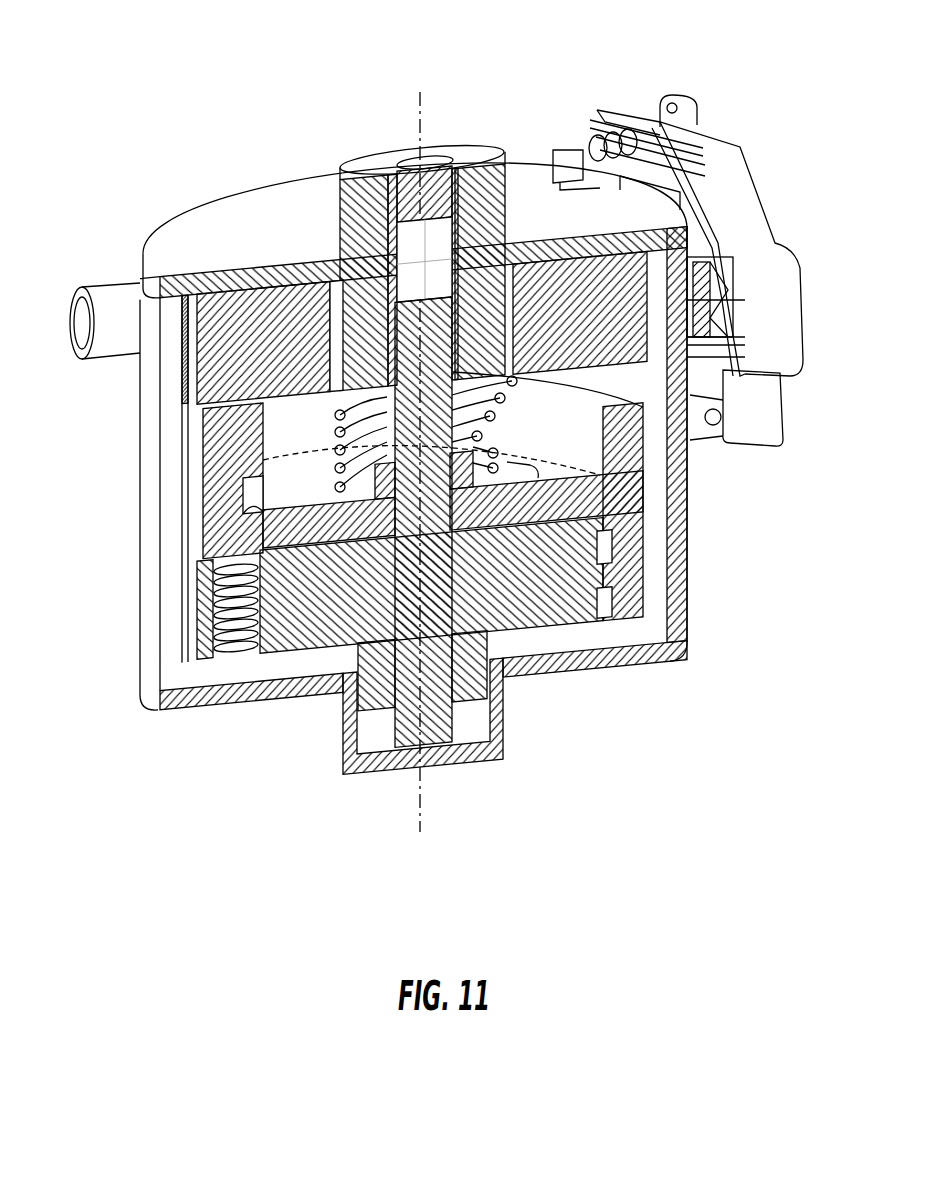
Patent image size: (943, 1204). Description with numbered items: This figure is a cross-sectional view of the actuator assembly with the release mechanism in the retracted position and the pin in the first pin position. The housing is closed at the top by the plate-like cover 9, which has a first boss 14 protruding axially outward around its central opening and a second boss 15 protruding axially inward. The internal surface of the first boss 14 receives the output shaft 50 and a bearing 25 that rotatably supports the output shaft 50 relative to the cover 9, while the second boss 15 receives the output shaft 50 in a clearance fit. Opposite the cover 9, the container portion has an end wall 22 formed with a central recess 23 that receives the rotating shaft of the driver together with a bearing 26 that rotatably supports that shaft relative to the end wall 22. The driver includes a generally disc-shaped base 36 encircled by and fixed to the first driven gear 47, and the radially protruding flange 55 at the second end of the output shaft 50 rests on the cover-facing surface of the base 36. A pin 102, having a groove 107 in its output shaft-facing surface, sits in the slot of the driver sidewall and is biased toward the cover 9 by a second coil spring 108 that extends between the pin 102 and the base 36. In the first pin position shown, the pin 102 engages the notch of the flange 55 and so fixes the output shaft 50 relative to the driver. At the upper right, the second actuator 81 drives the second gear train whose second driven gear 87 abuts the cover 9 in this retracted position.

The cover 9 is at (188, 213).
The first boss 14 is at (343, 212).
The second boss 15 is at (363, 320).
The bearing 25 is at (377, 230).
The second actuator 81 is at (707, 135).
The second driven gear 87 is at (188, 380).
The pin 102 is at (230, 460).
The groove 107 is at (253, 503).
The first driven gear 47 is at (188, 600).
The second coil spring 108 is at (220, 610).
The output shaft 50 is at (453, 437).
The flange 55 is at (553, 511).
The base 36 is at (547, 594).
The end wall 22 is at (620, 660).
The bearing 26 is at (470, 670).
The central recess 23 is at (470, 718).